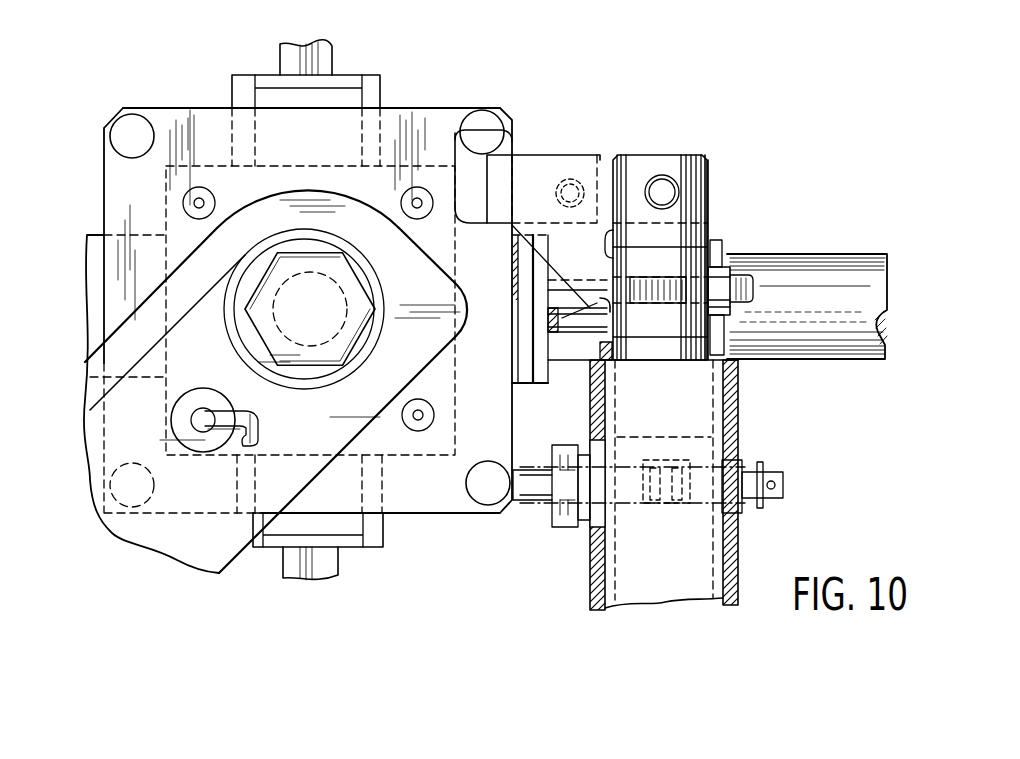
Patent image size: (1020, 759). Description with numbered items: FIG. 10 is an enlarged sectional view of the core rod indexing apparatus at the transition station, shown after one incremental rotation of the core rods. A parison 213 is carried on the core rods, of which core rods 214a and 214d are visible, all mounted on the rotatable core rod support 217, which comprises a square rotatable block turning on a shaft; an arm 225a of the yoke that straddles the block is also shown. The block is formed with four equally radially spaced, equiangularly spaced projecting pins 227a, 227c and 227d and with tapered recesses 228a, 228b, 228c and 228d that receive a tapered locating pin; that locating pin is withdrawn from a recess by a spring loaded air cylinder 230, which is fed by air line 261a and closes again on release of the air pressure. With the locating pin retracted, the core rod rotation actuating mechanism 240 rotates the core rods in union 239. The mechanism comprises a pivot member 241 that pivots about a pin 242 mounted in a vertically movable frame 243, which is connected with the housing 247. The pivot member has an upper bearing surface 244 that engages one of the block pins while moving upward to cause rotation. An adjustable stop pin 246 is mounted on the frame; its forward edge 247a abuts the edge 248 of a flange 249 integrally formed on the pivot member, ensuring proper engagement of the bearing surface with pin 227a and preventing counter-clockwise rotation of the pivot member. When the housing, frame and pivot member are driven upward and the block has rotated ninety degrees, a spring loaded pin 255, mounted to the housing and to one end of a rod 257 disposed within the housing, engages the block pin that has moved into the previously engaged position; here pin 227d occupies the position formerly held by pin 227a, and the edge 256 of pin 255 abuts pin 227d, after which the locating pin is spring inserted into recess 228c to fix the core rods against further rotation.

The parison 213 is at (858, 267).
The core rod 214a is at (318, 62).
The core rod 214d is at (548, 385).
The rotatable core rod support 217 is at (441, 70).
The arm of yoke 225a is at (147, 293).
The pin 227a is at (133, 114).
The pin 227c is at (138, 508).
The pin 227d is at (490, 506).
The tapered recess 228a is at (417, 187).
The tapered recess 228b is at (199, 187).
The tapered recess 228c is at (203, 434).
The tapered recess 228d is at (418, 432).
The air cylinder 230 is at (178, 402).
The union 239 is at (315, 367).
The core rod rotation actuating mechanism 240 is at (782, 438).
The pivot member 241 is at (587, 180).
The pin 242 is at (662, 192).
The vertically movable frame 243 is at (711, 222).
The upper bearing surface 244 is at (520, 154).
The adjustable stop pin 246 is at (742, 275).
The housing 247 is at (738, 406).
The forward edge 247a is at (606, 311).
The edge of flange 248 is at (683, 212).
The flange 249 is at (562, 318).
The spring loaded pin 255 is at (769, 498).
The edge of pin 256 is at (505, 497).
The rod 257 is at (643, 590).
The air line 261a is at (258, 408).